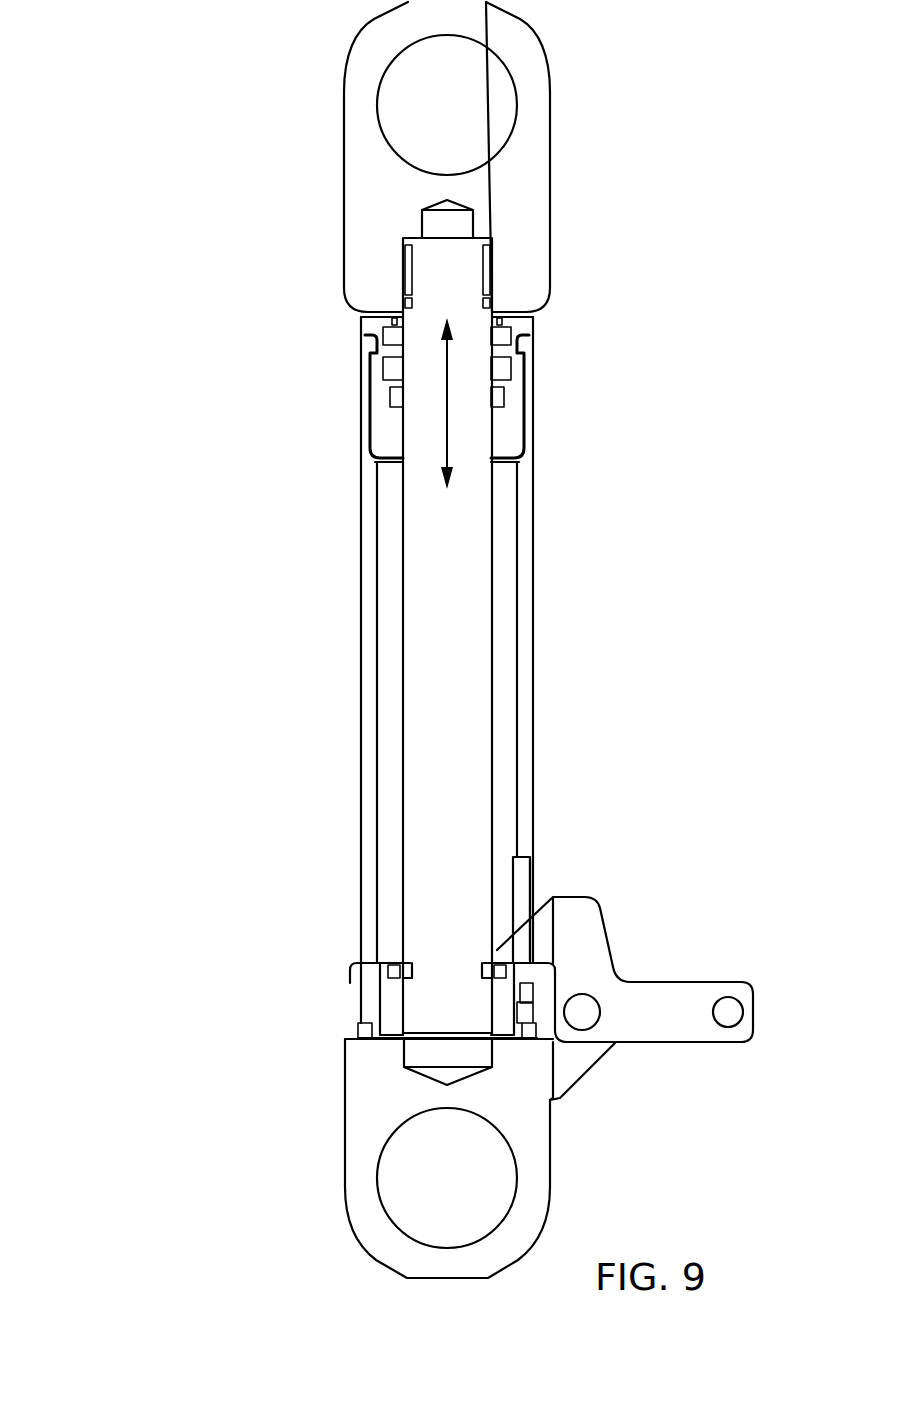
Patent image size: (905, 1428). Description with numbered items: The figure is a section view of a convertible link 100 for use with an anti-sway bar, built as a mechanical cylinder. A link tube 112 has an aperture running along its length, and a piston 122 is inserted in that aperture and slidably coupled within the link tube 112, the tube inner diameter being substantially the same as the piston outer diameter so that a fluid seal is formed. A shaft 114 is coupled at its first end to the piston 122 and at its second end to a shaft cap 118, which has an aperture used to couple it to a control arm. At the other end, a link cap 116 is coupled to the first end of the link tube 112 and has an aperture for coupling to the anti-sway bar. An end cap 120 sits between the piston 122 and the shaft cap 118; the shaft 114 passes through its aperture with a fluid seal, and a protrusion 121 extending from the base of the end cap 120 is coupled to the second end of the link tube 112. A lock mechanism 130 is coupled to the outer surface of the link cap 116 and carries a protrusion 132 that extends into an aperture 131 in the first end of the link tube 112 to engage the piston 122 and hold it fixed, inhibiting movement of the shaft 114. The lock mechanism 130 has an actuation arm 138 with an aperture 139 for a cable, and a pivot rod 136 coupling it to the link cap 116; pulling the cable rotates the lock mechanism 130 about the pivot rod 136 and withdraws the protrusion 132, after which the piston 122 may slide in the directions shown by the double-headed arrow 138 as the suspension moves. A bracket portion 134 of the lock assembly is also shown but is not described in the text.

The convertible link 100 is at (212, 107).
The link tube 112 is at (365, 668).
The shaft 114 is at (458, 565).
The link cap 116 is at (372, 1125).
The shaft cap 118 is at (523, 170).
The end cap 120 is at (316, 356).
The protrusion 121 is at (378, 394).
The piston 122 is at (390, 1002).
The lock mechanism 130 is at (661, 1007).
The aperture 131 is at (530, 897).
The protrusion 132 is at (500, 960).
The bracket 134 is at (658, 1007).
The pivot rod 136 is at (577, 1005).
The actuation arm 138 is at (447, 405).
The aperture 139 is at (728, 1010).